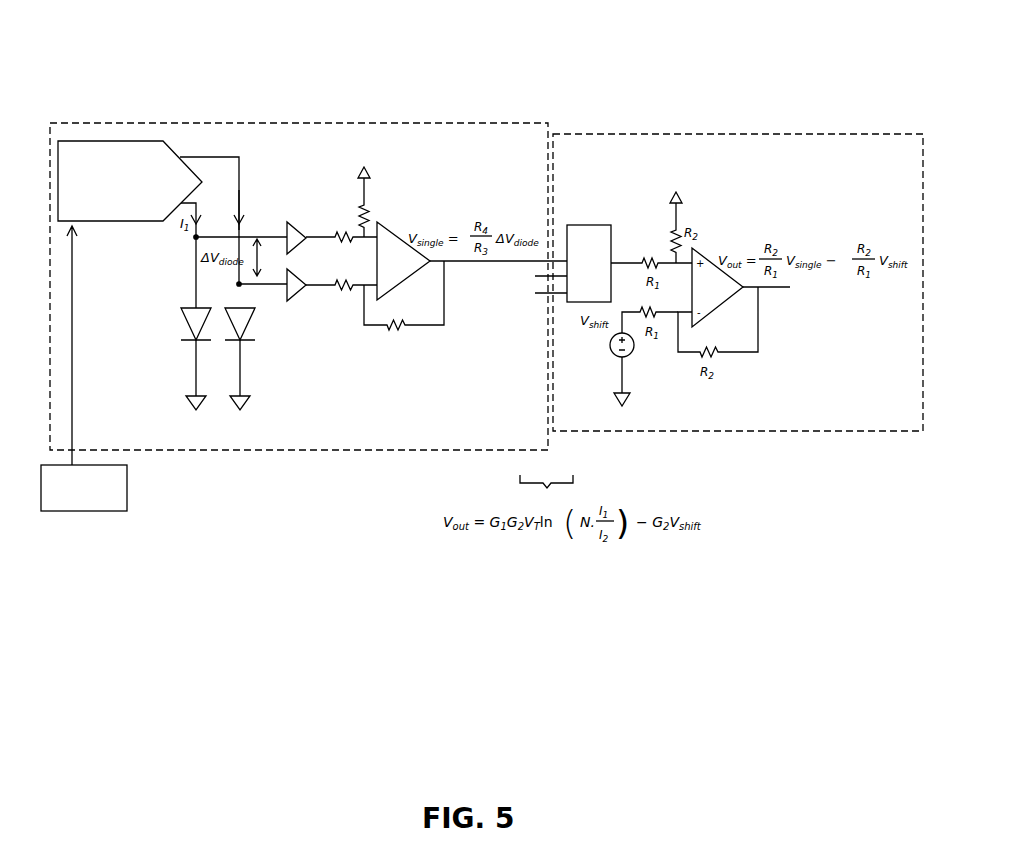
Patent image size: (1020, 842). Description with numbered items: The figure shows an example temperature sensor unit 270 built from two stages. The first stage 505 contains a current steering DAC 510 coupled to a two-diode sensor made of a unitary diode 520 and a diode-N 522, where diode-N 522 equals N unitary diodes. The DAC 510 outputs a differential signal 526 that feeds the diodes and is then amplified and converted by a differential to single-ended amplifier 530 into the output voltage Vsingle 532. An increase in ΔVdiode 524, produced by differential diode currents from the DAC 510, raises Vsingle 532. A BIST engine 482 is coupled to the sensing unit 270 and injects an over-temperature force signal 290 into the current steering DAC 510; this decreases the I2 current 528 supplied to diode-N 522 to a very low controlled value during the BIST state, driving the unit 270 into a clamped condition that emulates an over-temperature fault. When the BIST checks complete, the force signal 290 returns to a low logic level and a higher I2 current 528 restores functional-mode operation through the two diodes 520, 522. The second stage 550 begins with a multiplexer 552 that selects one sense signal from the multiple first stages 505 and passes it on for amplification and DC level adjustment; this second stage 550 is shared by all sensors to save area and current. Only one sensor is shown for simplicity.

The temperature sensor unit 270 is at (97, 43).
The first stage 505 is at (455, 122).
The second stage 550 is at (750, 130).
The current steering digital-to-analog converter (DAC) 510 is at (100, 140).
The differential signal 526 is at (207, 175).
The I2 current 528 is at (243, 200).
The ΔVdiode 524 is at (262, 238).
The diode 520 is at (178, 310).
The diode-N 522 is at (246, 335).
The differential to single-ended amplifier 530 is at (413, 265).
The output voltage Vsingle 532 is at (494, 268).
The multiplexer 552 is at (608, 225).
The over-temperature force signal 290 is at (70, 383).
The BIST engine 482 is at (84, 488).